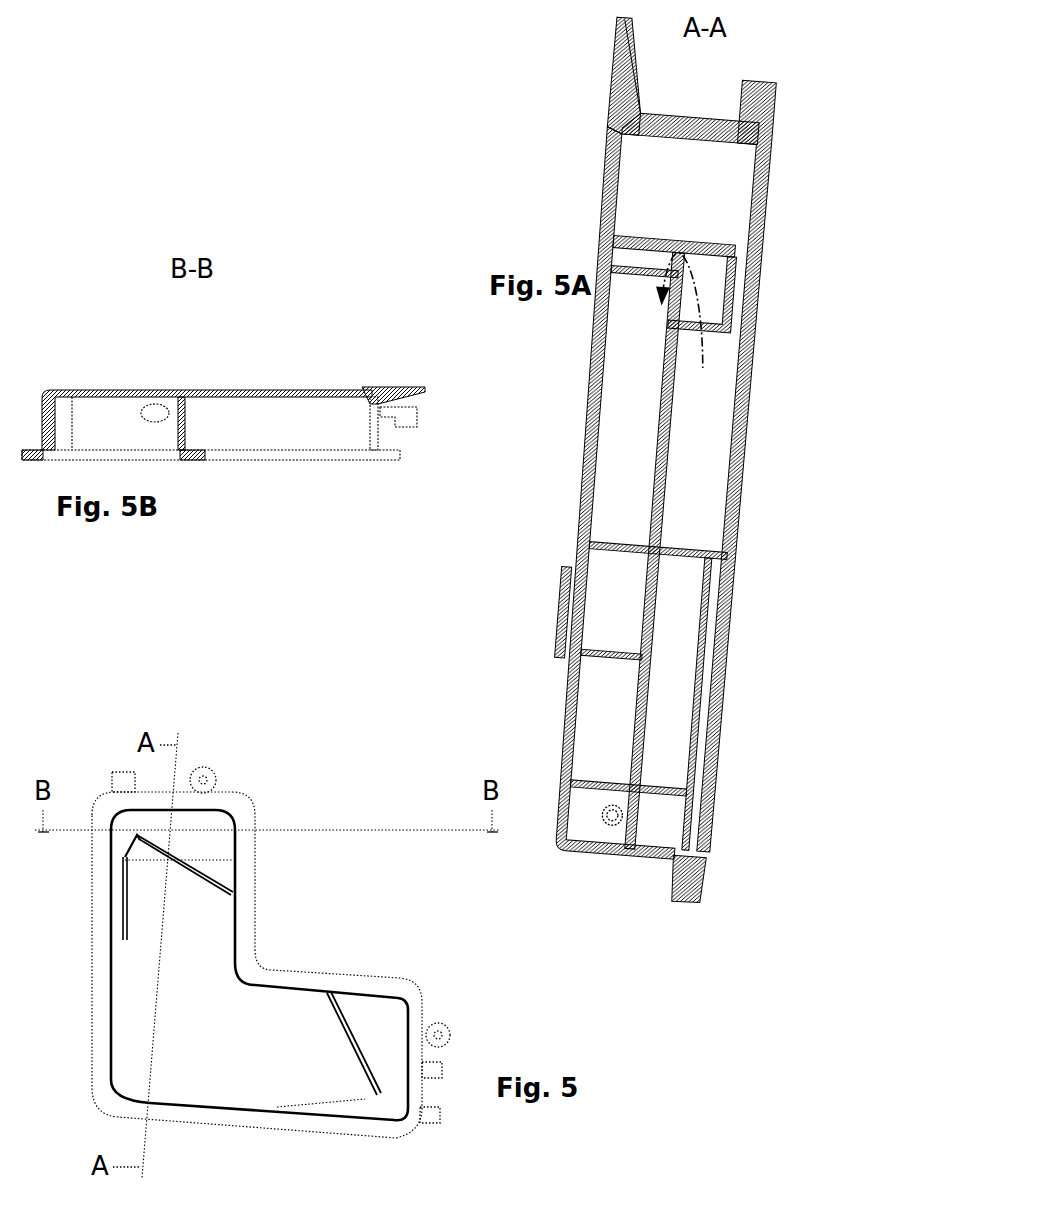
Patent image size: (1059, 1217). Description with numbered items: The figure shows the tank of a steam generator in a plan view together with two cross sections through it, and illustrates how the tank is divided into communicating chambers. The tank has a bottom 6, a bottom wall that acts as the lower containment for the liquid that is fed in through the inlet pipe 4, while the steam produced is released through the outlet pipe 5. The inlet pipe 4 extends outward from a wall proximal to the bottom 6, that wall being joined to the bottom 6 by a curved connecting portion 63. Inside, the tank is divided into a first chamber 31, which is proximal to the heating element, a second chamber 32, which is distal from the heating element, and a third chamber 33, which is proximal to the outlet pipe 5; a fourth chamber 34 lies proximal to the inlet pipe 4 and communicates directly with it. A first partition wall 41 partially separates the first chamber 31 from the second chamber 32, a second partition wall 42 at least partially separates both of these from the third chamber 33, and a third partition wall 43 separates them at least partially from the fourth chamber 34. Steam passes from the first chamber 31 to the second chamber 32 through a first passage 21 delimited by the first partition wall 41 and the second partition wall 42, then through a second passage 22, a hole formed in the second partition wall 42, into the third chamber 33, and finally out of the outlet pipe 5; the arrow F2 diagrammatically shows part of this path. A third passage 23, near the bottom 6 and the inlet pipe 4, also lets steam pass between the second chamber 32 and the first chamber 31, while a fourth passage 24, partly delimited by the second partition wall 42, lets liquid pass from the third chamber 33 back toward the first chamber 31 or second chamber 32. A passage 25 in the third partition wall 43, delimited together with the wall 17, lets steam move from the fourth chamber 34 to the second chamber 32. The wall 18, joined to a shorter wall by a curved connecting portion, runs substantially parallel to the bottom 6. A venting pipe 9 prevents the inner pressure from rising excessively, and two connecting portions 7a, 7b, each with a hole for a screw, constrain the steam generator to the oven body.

In FIG. 5A, the inlet pipe 4 is at (612, 818).
In FIG. 5, the inlet pipe 4 is at (425, 1115).
In FIG. 5, the outlet pipe 5 is at (120, 777).
In FIG. 5A, the bottom 6 is at (585, 526).
In FIG. 5B, the bottom 6 is at (307, 392).
In FIG. 5A, the connecting portion 7a is at (628, 108).
In FIG. 5, the connecting portion 7a is at (206, 772).
In FIG. 5B, the connecting portion 7b is at (393, 392).
In FIG. 5, the connecting portion 7b is at (445, 1037).
In FIG. 5B, the venting pipe 9 is at (395, 420).
In FIG. 5, the wall 17 is at (392, 1010).
In FIG. 5B, the wall 18 is at (225, 427).
In FIG. 5A, the first passage 21 is at (660, 242).
In FIG. 5, the first passage 21 is at (148, 850).
In FIG. 5B, the second passage 22 is at (155, 415).
In FIG. 5, the third passage 23 is at (327, 1107).
In FIG. 5, the fourth passage 24 is at (117, 890).
In FIG. 5A, the passage 25 is at (607, 618).
In FIG. 5A, the first chamber 31 is at (687, 497).
In FIG. 5, the first chamber 31 is at (186, 1004).
In FIG. 5A, the second chamber 32 is at (625, 482).
In FIG. 5A, the third chamber 33 is at (668, 203).
In FIG. 5, the third chamber 33 is at (203, 844).
In FIG. 5, the fourth chamber 34 is at (370, 1029).
In FIG. 5A, the first partition wall 41 is at (668, 447).
In FIG. 5, the first partition wall 41 is at (125, 1050).
In FIG. 5A, the second partition wall 42 is at (716, 297).
In FIG. 5B, the second partition wall 42 is at (93, 428).
In FIG. 5, the second partition wall 42 is at (215, 875).
In FIG. 5A, the third partition wall 43 is at (600, 752).
In FIG. 5, the third partition wall 43 is at (337, 1005).
In FIG. 5A, the connecting portion 63 is at (593, 818).
In FIG. 5A, the arrow F2 is at (703, 365).